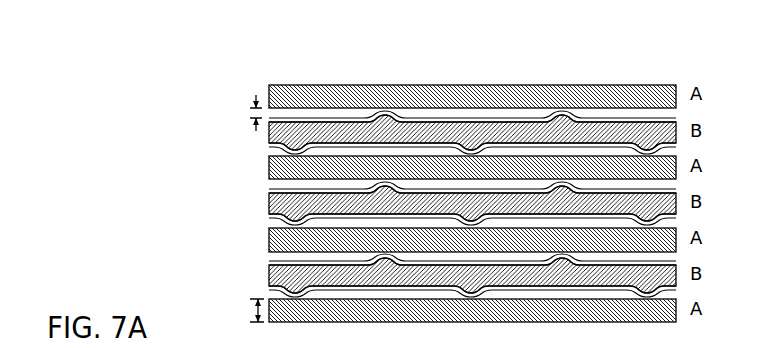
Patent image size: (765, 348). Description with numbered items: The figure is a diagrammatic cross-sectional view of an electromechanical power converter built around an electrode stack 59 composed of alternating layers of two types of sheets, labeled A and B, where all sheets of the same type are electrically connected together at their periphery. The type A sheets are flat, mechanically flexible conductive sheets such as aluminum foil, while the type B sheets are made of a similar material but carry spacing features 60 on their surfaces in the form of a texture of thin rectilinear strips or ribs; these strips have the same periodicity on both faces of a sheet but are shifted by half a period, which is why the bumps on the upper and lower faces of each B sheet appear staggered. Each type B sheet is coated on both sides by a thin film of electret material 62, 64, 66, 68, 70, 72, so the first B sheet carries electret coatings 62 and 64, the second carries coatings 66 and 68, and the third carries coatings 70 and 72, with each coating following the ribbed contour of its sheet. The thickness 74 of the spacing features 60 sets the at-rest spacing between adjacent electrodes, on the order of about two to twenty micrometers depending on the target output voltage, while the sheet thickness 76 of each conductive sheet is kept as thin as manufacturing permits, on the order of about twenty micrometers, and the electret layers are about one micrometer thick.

The electrode stack 59 is at (158, 147).
The spacing features 60 is at (560, 113).
The electret material film 62 is at (298, 120).
The electret material film 64 is at (270, 145).
The electret material film 66 is at (272, 191).
The electret material film 68 is at (270, 218).
The electret material film 70 is at (268, 263).
The electret material film 72 is at (268, 289).
The thickness of spacing features 74 is at (260, 95).
The sheet thickness 76 is at (258, 312).